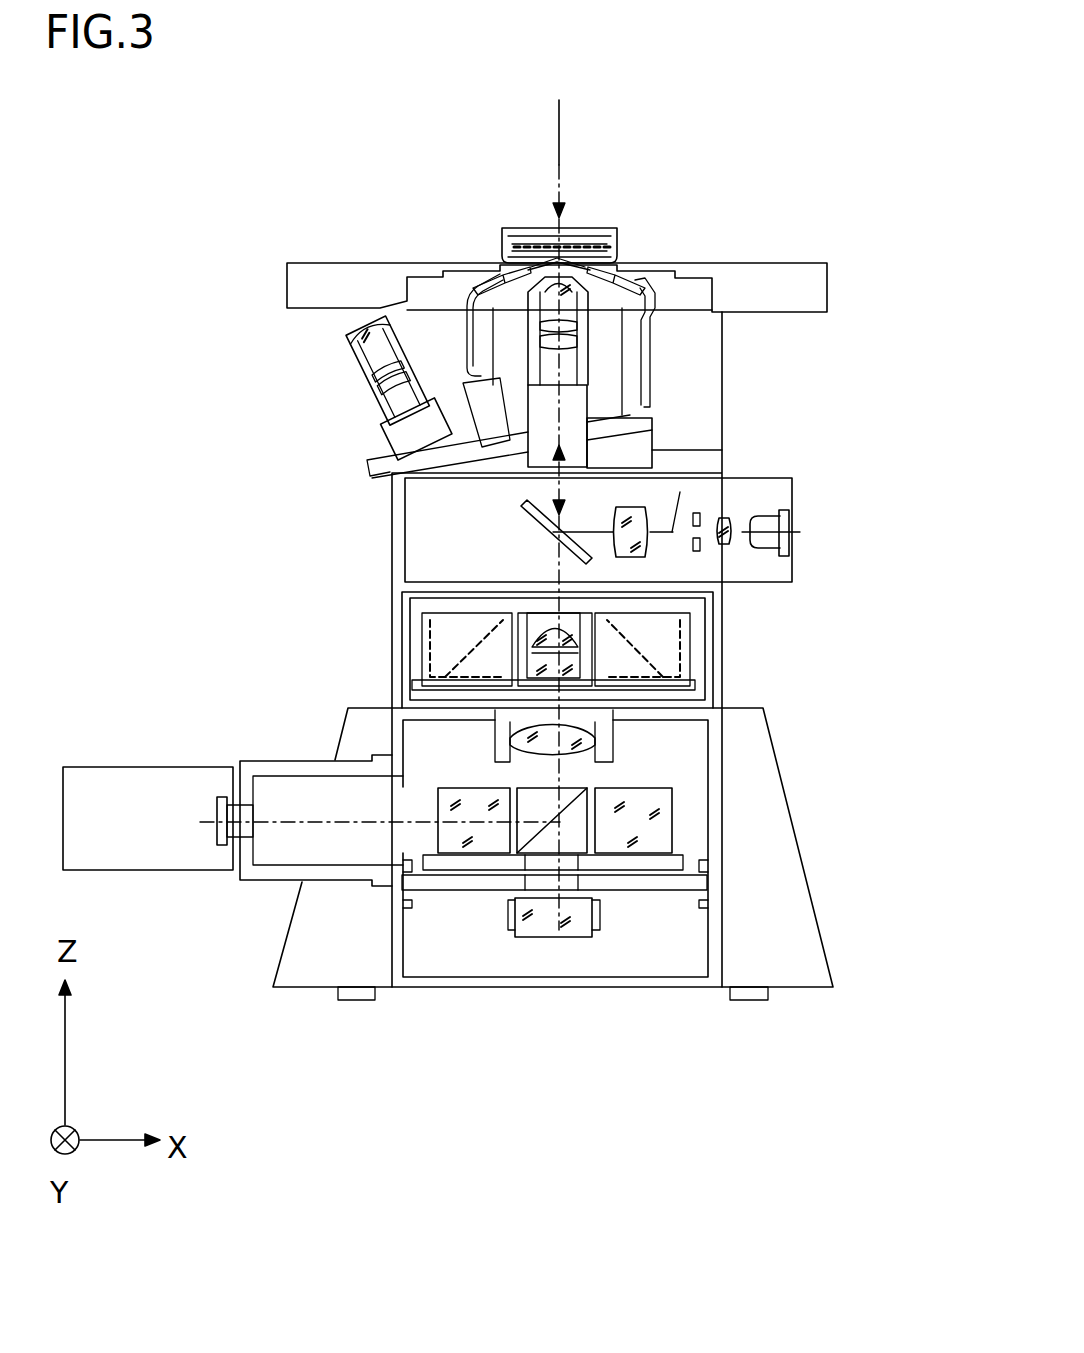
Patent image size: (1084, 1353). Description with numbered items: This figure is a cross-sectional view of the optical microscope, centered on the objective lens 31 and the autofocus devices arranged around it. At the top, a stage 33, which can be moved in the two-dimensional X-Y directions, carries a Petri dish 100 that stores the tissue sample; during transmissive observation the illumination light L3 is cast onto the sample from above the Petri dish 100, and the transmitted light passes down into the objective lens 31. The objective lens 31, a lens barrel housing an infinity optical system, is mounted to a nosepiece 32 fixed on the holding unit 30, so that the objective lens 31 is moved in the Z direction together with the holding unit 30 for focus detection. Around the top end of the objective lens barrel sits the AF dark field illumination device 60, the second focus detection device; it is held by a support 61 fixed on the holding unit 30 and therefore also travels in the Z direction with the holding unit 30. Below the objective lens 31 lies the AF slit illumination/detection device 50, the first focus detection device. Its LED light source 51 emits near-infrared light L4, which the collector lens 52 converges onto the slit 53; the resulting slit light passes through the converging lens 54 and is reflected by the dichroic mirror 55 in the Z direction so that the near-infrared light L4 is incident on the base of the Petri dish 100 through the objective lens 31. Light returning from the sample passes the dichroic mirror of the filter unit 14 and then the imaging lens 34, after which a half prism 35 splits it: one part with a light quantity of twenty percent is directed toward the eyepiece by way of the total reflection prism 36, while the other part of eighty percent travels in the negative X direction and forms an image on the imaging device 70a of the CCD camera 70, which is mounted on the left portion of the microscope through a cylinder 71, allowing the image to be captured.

The Petri dish 100 is at (500, 253).
The AF dark field illumination device 60 is at (617, 290).
The support 61 is at (637, 337).
The stage 33 is at (335, 272).
The objective lens 31 is at (582, 357).
The holding unit 30 is at (637, 430).
The nosepiece 32 is at (380, 447).
The epi fluorescence filter unit 14 is at (537, 615).
The AF slit illumination/detection device 50 is at (686, 561).
The LED light source 51 is at (822, 525).
The collector lens 52 is at (730, 544).
The slit 53 is at (700, 543).
The converging lens 54 is at (640, 555).
The dichroic mirror 55 is at (590, 560).
The imaging lens 34 is at (588, 737).
The half prism 35 is at (587, 778).
The total reflection prism 36 is at (573, 923).
The CCD camera 70 is at (118, 785).
The imaging device 70a is at (222, 797).
The cylinder 71 is at (297, 760).
The illumination light L3 is at (559, 133).
The near-infrared light L4 is at (553, 493).